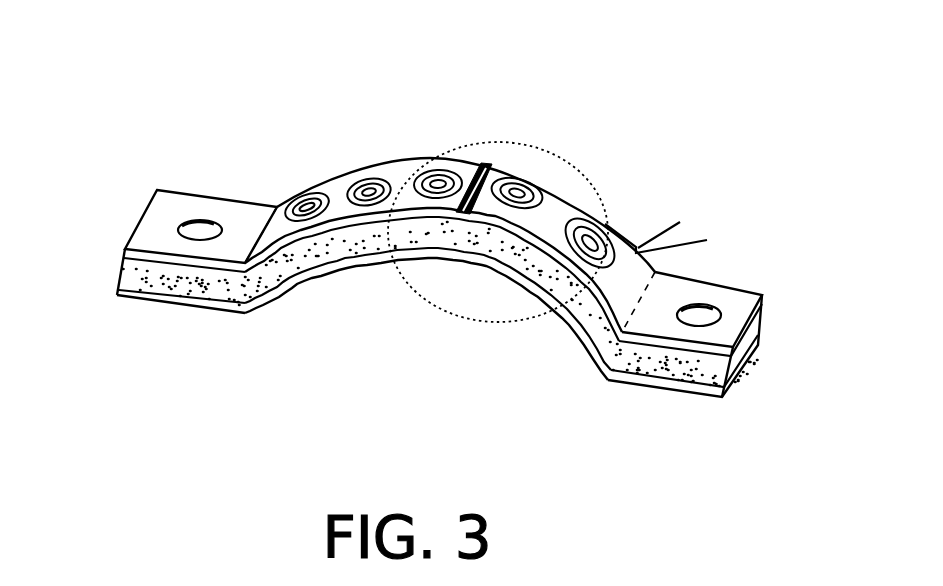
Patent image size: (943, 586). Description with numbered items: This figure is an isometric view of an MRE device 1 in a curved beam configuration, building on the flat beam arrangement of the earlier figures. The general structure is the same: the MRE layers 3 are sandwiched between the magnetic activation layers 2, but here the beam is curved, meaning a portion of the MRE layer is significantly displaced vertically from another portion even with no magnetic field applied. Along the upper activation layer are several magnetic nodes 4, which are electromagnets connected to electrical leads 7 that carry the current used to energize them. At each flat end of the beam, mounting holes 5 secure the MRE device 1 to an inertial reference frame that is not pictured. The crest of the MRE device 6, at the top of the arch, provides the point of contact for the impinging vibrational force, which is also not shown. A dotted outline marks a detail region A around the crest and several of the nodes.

The MRE device 1 is at (426, 200).
The magnetic activation layers 2 is at (249, 211).
The MRE layers 3 is at (131, 273).
The magnetic nodes 4 is at (326, 172).
The mounting holes 5 is at (196, 215).
The crest of the MRE device 6 is at (484, 160).
The electrical leads 7 is at (691, 211).
The detail region A is at (530, 138).